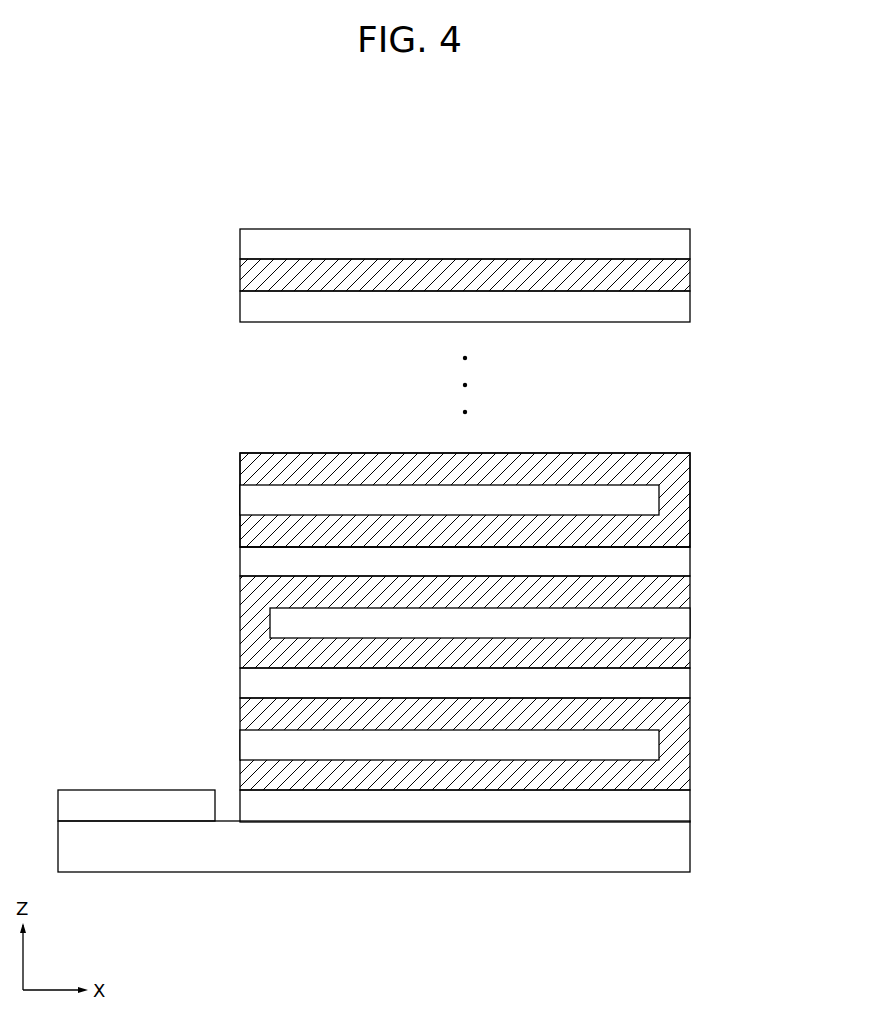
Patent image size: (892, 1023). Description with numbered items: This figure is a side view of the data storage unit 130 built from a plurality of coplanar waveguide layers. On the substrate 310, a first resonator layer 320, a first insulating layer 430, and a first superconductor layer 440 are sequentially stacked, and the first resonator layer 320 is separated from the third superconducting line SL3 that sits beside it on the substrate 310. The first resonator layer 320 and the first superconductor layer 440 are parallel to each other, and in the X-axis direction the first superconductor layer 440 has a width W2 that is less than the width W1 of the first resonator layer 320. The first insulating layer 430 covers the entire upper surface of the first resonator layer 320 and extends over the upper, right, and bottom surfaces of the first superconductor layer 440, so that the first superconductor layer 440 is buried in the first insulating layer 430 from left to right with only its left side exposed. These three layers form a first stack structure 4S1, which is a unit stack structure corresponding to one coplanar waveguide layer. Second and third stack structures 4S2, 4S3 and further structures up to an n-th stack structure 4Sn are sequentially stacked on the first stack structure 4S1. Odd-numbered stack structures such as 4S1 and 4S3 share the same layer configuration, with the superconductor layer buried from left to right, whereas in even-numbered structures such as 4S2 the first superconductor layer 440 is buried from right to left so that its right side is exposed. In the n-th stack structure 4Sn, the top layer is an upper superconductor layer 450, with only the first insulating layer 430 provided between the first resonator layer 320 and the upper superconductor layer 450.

The data storage unit 130 is at (698, 195).
The substrate 310 is at (684, 862).
The first resonator layer 320 is at (684, 310).
The first insulating layer 430 is at (690, 272).
The first superconductor layer 440 is at (682, 622).
The upper superconductor layer 450 is at (684, 247).
The third superconducting line SL3 is at (133, 800).
The width of the first resonator layer W1 is at (690, 843).
The width of the first superconductor layer W2 is at (659, 500).
The first stack structure 4S1 is at (766, 700).
The second stack structure 4S2 is at (766, 577).
The third stack structure 4S3 is at (766, 453).
The n-th stack structure 4Sn is at (766, 230).